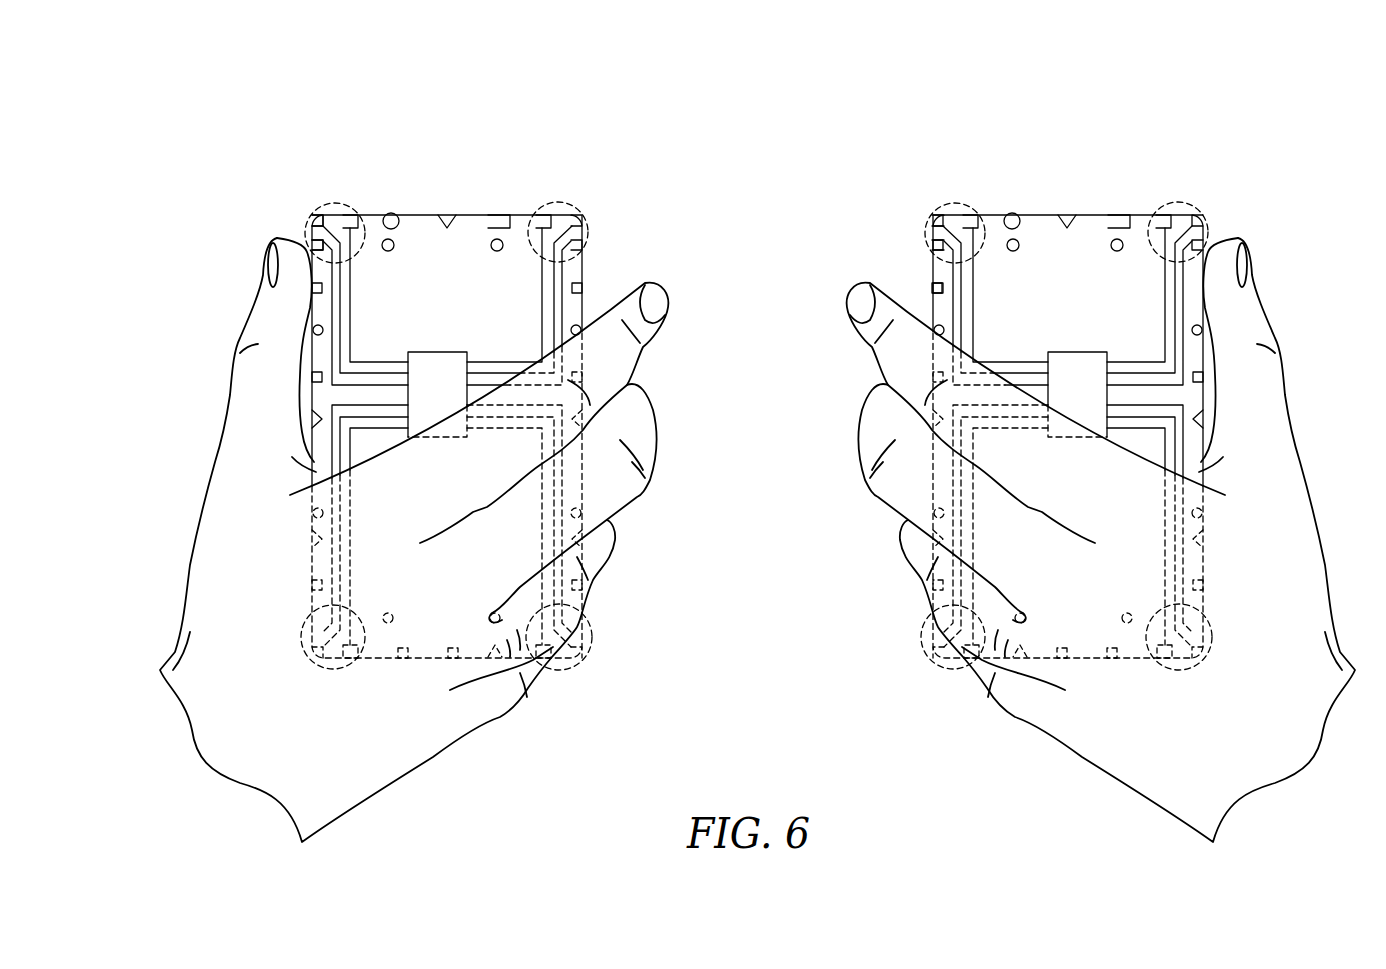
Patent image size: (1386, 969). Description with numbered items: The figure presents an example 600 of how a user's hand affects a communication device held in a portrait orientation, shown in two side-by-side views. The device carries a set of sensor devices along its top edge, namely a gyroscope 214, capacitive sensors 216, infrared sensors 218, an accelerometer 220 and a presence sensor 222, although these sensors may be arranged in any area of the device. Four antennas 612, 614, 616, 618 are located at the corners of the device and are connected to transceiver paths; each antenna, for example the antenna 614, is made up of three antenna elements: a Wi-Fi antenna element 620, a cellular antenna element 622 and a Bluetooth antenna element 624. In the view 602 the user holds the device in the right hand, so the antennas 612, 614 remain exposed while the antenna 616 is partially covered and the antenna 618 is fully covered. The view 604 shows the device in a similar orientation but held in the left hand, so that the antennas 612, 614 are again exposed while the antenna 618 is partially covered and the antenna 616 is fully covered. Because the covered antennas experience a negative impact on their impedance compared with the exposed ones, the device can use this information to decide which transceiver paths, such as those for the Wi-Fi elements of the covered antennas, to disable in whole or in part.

The example of hand impact in portrait orientation 600 is at (1312, 104).
The right-hand portrait view 602 is at (253, 170).
The left-hand portrait view 604 is at (1258, 170).
The gyroscope 214 is at (497, 208).
The capacitive sensors 216 is at (447, 208).
The infrared sensors 218 is at (393, 247).
The accelerometer 220 is at (392, 212).
The presence sensor 222 is at (315, 288).
The antenna 612 is at (568, 208).
The antenna 614 is at (333, 205).
The antenna 616 is at (593, 637).
The antenna 618 is at (300, 632).
The Wi-Fi antenna element 620 is at (540, 212).
The cellular antenna element 622 is at (313, 225).
The Bluetooth antenna element 624 is at (317, 252).